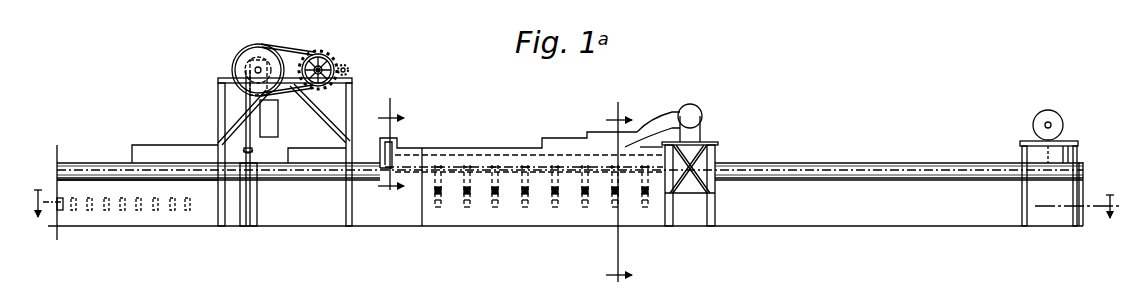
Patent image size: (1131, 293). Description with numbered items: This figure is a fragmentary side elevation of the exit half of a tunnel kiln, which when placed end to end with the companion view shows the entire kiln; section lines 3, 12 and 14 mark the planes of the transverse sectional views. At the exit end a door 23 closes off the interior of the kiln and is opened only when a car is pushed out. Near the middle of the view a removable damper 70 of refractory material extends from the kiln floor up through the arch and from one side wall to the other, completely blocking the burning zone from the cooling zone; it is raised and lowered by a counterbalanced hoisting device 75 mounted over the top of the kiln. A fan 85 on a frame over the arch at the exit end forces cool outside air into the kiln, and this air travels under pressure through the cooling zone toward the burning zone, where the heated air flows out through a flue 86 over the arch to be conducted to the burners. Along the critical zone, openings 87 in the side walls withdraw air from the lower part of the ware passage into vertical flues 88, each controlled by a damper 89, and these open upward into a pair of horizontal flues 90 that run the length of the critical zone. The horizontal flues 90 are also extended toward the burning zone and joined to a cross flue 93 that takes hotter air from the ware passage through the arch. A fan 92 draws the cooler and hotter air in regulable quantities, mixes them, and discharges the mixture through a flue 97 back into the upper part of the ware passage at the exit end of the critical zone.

The section line 3- 3 is at (571, 199).
The section line 12- 12 is at (613, 197).
The section line 14- 14 is at (389, 152).
The door 23 is at (1085, 226).
The removable damper 70 is at (247, 207).
The counterbalanced hoisting device 75 is at (317, 46).
The fan 85 is at (1060, 114).
The flue 86 is at (305, 150).
The openings 87 is at (587, 208).
The vertical flues 88 is at (612, 208).
The damper 89 is at (553, 210).
The horizontal flues 90 is at (488, 160).
The fan 92 is at (703, 116).
The cross flue 93 is at (403, 141).
The flue 97 is at (624, 140).